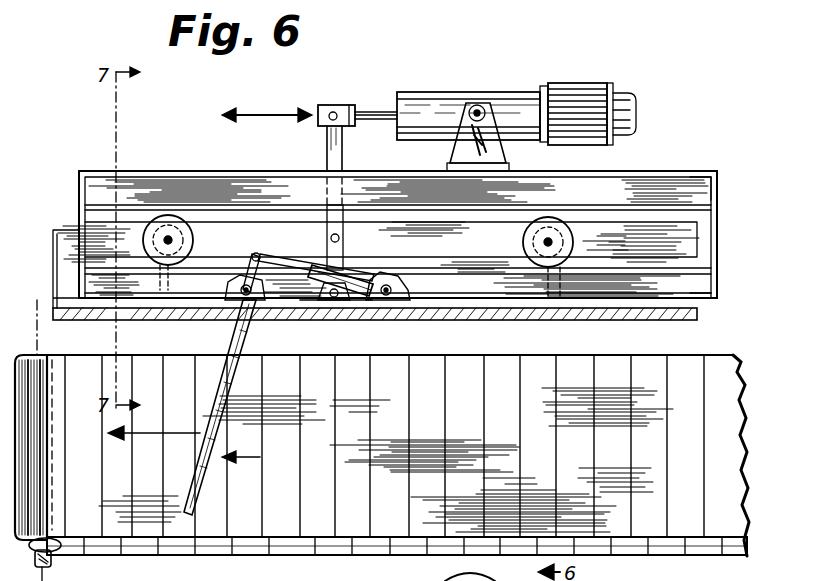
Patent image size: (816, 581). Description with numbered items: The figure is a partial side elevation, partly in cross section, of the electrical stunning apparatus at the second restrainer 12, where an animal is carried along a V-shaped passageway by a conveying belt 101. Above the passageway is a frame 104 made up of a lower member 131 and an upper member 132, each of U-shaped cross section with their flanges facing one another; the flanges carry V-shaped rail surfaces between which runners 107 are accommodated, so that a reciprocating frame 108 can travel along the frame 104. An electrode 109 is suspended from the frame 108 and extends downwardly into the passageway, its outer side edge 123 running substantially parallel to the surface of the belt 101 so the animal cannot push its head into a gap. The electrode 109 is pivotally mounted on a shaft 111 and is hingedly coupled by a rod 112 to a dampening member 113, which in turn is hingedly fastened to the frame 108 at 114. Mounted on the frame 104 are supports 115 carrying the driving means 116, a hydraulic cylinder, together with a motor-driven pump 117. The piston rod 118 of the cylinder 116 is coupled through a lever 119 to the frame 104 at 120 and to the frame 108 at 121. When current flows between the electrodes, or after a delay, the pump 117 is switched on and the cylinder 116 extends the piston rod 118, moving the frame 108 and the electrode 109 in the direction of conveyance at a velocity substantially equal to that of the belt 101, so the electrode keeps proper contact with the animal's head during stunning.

The conveying belt 101 is at (332, 494).
The frame 104 is at (140, 188).
The runners 107 is at (196, 240).
The frame 108 is at (78, 322).
The electrode 109 is at (194, 508).
The shaft 111 is at (255, 308).
The rod 112 is at (316, 277).
The dampening member 113 is at (368, 320).
The hinge fastening point 114 is at (405, 320).
The support 115 is at (500, 152).
The driving means 116 is at (512, 108).
The motor-driven pump 117 is at (602, 82).
The piston rod 118 is at (355, 104).
The lever 119 is at (325, 146).
The coupling point 120 is at (346, 240).
The coupling point 121 is at (326, 322).
The outer side edge 123 is at (218, 436).
The lower member 131 is at (700, 294).
The upper member 132 is at (706, 174).
The second restrainer 12 is at (685, 520).